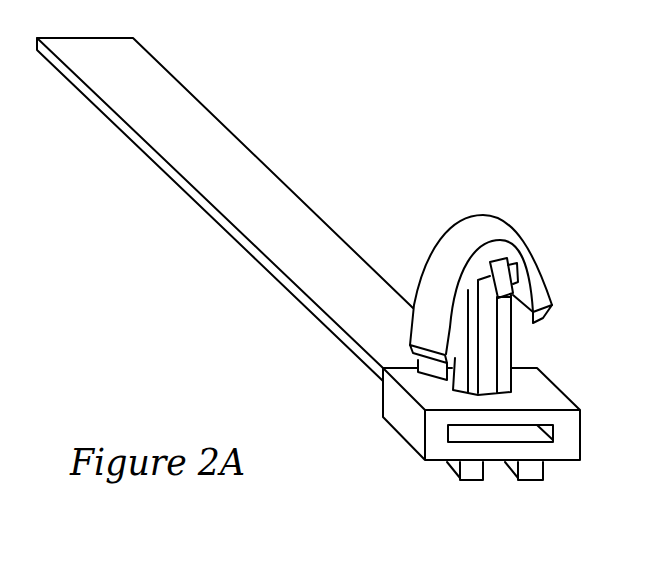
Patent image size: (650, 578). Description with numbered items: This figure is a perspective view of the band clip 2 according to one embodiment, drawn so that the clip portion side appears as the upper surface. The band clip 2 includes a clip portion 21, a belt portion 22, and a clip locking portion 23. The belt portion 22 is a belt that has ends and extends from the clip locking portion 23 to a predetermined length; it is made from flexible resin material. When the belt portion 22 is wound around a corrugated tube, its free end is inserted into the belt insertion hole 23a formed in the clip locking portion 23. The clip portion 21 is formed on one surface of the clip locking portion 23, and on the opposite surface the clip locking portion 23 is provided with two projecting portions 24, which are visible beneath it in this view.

The band clip 2 is at (441, 66).
The clip portion 21 is at (502, 222).
The belt portion 22 is at (250, 173).
The clip locking portion 23 is at (506, 458).
The belt insertion hole 23a is at (525, 438).
The projecting portions 24 is at (468, 480).